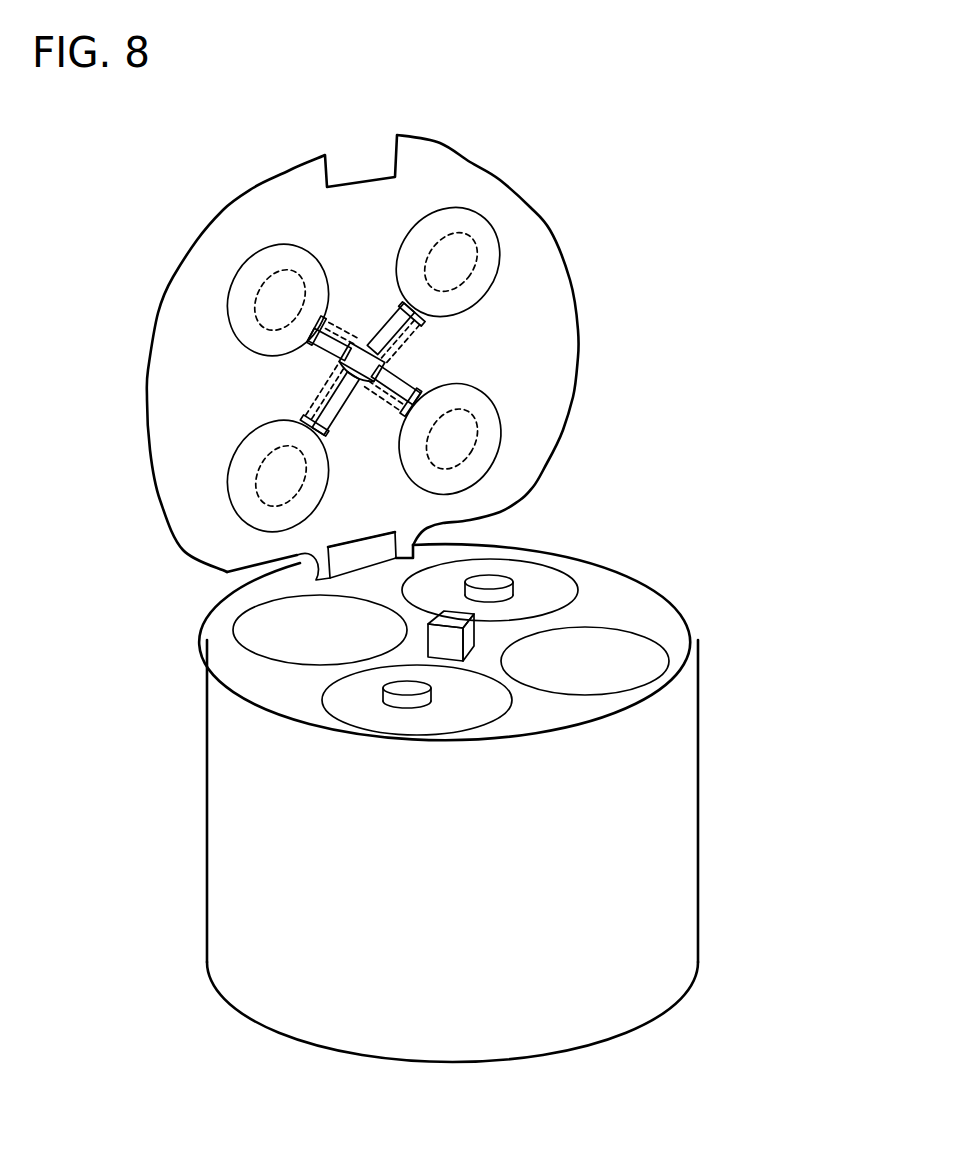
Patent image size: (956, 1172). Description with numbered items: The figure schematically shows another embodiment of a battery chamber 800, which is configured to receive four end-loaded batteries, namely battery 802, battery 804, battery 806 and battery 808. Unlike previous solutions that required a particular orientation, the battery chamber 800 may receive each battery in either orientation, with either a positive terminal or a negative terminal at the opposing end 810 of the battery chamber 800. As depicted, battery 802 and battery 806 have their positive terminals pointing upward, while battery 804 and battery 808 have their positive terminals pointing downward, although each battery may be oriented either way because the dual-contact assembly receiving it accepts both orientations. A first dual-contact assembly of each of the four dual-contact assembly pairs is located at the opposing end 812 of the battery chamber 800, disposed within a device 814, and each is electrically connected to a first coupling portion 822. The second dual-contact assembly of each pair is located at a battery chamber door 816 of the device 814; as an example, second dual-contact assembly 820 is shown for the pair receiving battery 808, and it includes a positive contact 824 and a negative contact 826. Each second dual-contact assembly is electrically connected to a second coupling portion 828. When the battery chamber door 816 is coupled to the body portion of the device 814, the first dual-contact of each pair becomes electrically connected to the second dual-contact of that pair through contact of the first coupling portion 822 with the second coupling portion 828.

The battery chamber 800 is at (652, 492).
The battery 802 is at (562, 602).
The battery 804 is at (654, 674).
The battery 806 is at (486, 708).
The battery 808 is at (382, 644).
The opposing end of battery chamber 810 is at (718, 627).
The opposing end of battery chamber 812 is at (666, 1037).
The device 814 is at (646, 882).
The battery chamber door 816 is at (382, 226).
The second dual-contact assembly 820 is at (218, 476).
The first coupling portion 822 is at (466, 641).
The positive contact 824 is at (303, 484).
The negative contact 826 is at (302, 511).
The second coupling portion 828 is at (372, 378).